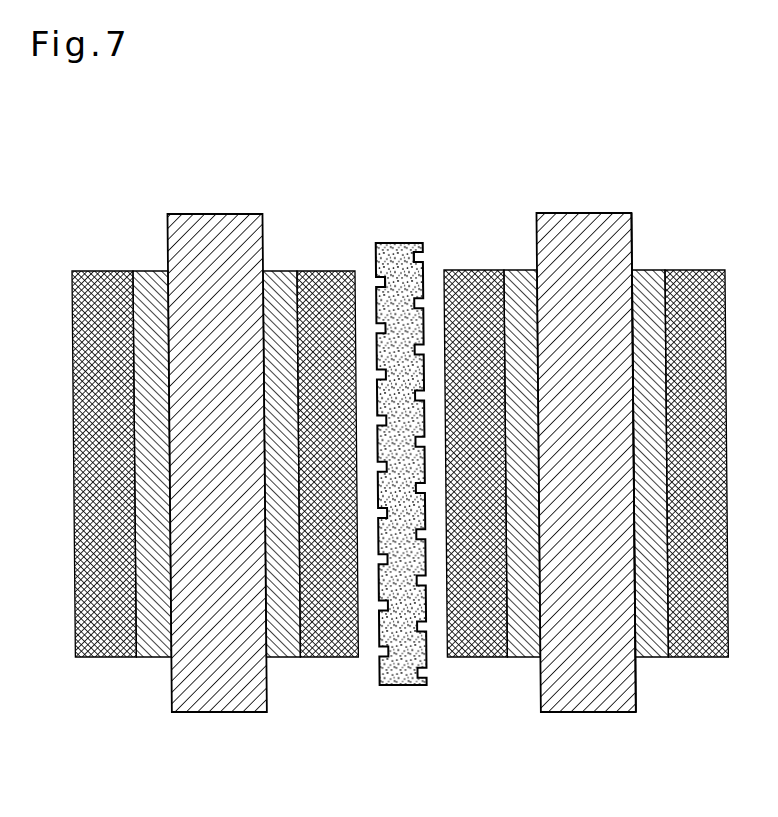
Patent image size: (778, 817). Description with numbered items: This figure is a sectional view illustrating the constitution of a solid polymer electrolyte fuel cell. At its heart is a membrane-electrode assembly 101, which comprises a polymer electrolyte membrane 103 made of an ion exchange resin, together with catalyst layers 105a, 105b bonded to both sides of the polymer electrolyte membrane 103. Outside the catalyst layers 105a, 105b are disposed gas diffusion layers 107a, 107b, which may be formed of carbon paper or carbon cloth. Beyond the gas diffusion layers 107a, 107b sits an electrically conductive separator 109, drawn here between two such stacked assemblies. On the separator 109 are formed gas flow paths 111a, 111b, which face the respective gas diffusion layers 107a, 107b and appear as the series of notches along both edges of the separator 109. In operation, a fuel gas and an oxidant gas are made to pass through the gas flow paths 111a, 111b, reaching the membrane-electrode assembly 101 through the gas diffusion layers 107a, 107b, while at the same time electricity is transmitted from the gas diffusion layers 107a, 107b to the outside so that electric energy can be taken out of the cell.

The membrane-electrode assembly 101 is at (216, 209).
The polymer electrolyte membrane 103 is at (624, 236).
The catalyst layer 105a is at (655, 270).
The catalyst layer 105b is at (519, 270).
The gas diffusion layer 107a is at (716, 270).
The gas diffusion layer 107b is at (476, 270).
The separator 109 is at (400, 243).
The gas flow path 111a is at (422, 257).
The gas flow path 111b is at (376, 282).